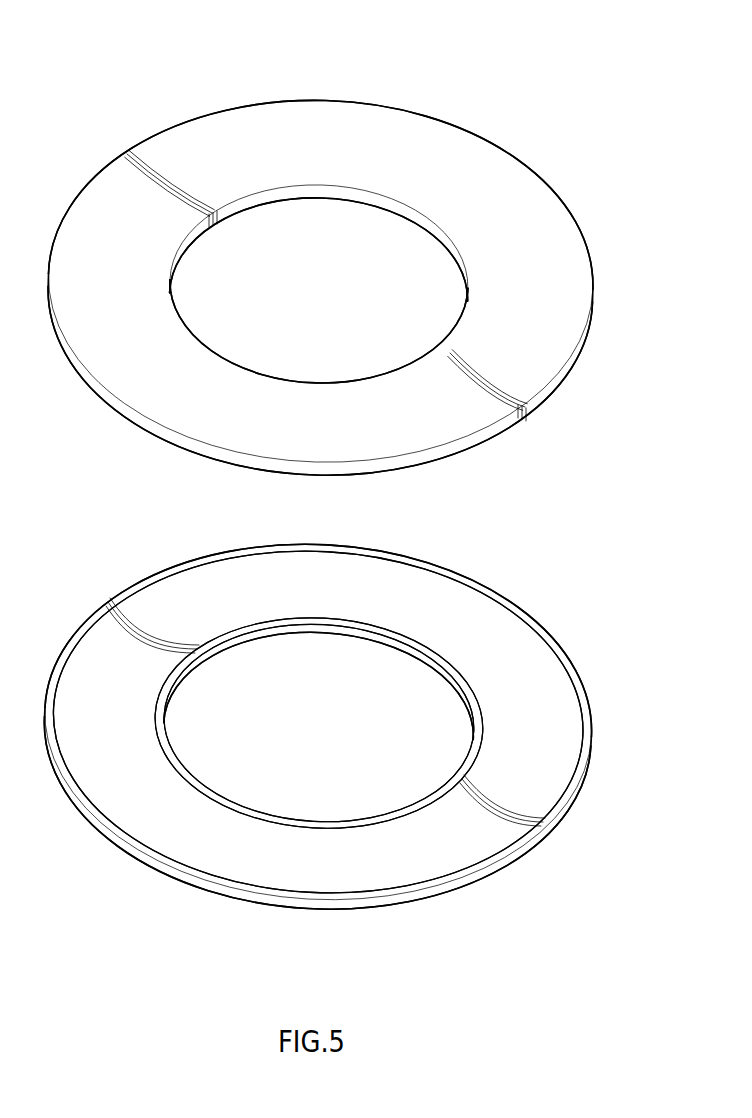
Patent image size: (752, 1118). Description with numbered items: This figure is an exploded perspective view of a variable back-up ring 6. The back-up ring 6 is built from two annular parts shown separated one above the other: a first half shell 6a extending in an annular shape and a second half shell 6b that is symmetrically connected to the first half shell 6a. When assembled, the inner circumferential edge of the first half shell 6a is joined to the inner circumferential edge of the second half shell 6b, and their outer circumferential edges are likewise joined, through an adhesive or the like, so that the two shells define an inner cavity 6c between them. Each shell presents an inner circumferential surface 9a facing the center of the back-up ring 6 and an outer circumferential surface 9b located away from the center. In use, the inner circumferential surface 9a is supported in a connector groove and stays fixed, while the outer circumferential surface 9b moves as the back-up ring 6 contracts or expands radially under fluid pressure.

The back-up ring 6 is at (107, 38).
The first half shell 6a is at (421, 88).
The second half shell 6b is at (570, 609).
The inner cavity 6c is at (548, 733).
The inner circumferential surface 9a is at (379, 207).
The outer circumferential surface 9b is at (556, 384).